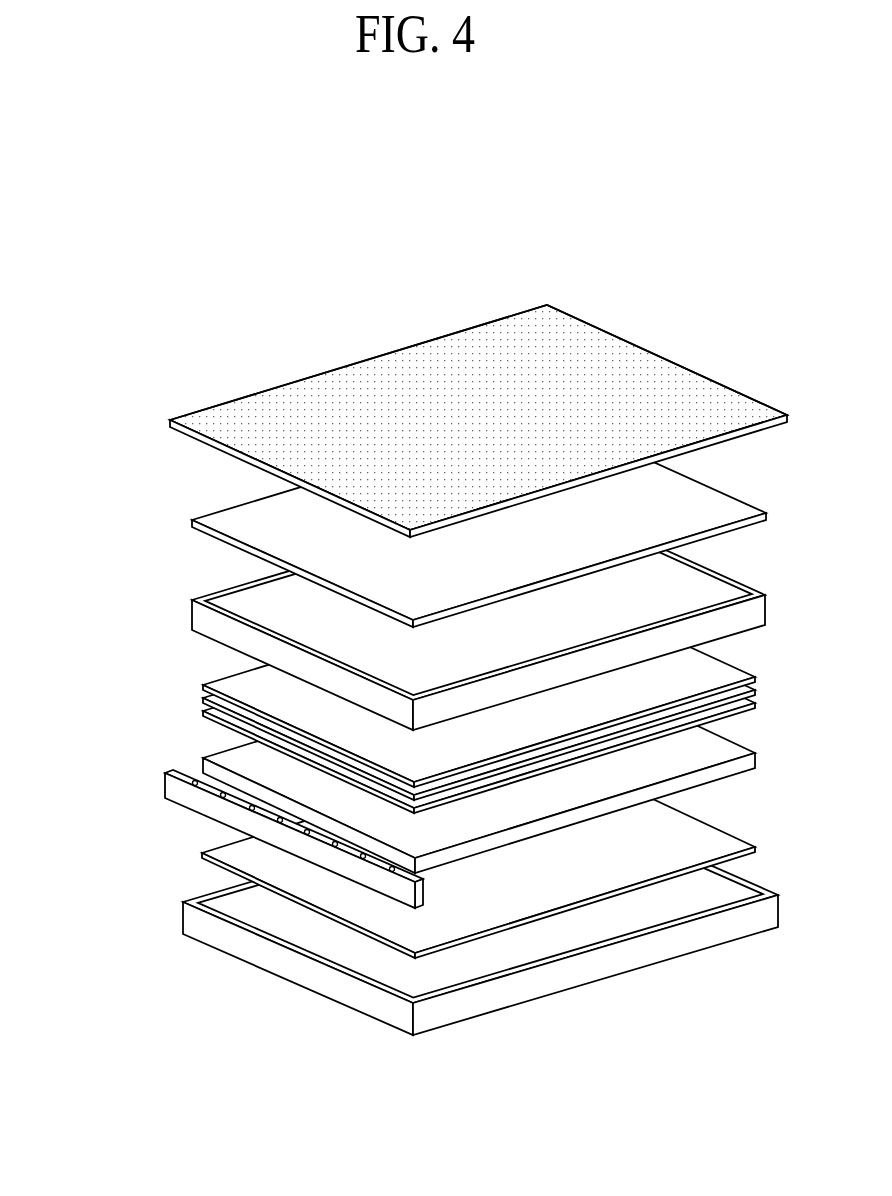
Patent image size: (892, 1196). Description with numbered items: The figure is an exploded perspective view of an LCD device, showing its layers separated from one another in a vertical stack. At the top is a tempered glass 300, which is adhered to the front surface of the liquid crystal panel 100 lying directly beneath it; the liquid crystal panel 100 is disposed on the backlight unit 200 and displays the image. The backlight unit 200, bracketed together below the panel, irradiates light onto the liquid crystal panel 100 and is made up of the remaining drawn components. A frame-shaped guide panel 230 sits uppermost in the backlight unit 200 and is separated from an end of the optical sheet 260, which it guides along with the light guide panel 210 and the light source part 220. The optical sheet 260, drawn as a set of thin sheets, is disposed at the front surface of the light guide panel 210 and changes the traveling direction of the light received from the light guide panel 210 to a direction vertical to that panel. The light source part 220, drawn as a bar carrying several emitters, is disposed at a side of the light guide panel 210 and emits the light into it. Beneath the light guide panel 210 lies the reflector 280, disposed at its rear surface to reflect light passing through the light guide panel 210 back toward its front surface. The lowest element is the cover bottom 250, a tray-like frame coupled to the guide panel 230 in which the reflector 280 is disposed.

The liquid crystal panel 100 is at (424, 520).
The backlight unit 200 is at (405, 765).
The light guide panel 210 is at (427, 763).
The light source part 220 is at (261, 839).
The guide panel 230 is at (432, 612).
The cover bottom 250 is at (439, 914).
The optical sheet 260 is at (427, 696).
The reflector 280 is at (427, 852).
The tempered glass 300 is at (434, 421).